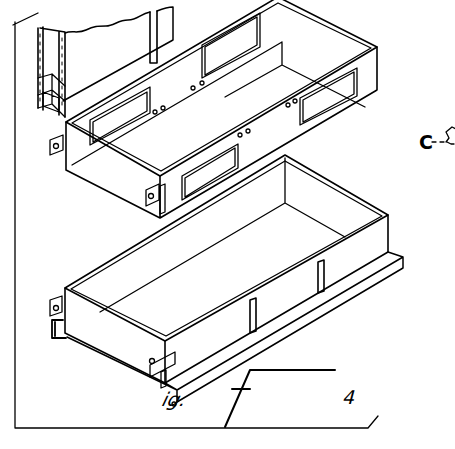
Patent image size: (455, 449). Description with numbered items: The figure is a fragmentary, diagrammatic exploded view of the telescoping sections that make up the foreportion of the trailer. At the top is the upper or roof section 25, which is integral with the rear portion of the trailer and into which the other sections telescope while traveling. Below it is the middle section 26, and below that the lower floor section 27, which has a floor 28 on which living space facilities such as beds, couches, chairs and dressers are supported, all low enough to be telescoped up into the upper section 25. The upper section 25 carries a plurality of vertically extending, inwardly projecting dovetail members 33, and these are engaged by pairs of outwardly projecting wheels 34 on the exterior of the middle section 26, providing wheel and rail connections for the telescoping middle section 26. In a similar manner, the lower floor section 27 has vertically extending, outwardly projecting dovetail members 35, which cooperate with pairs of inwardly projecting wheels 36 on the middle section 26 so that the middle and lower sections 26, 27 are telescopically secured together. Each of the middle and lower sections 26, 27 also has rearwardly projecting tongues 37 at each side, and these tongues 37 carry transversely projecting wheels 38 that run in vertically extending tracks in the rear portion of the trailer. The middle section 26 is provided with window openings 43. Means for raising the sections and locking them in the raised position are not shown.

The upper section 25 is at (174, 16).
The middle section 26 is at (338, 20).
The lower floor section 27 is at (388, 220).
The floor 28 is at (236, 286).
The dovetail members 33 is at (150, 50).
The wheels 34 is at (280, 127).
The dovetail members 35 is at (326, 280).
The wheels 36 is at (160, 113).
The tongues 37 is at (176, 357).
The wheels 38 is at (152, 358).
The window openings 43 is at (346, 100).